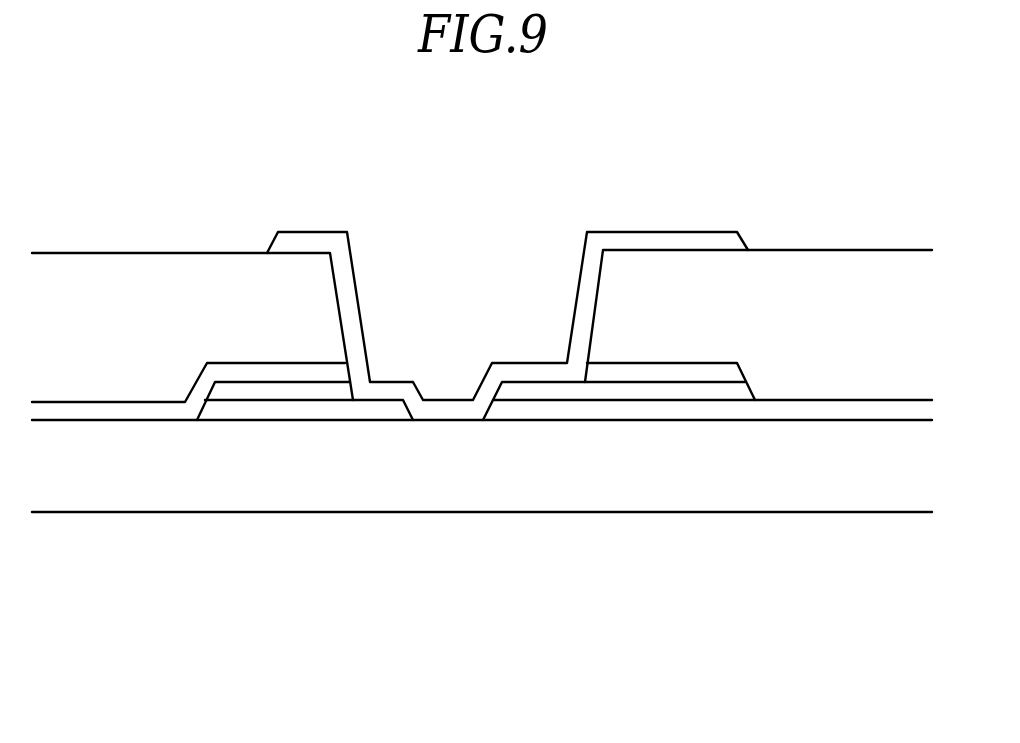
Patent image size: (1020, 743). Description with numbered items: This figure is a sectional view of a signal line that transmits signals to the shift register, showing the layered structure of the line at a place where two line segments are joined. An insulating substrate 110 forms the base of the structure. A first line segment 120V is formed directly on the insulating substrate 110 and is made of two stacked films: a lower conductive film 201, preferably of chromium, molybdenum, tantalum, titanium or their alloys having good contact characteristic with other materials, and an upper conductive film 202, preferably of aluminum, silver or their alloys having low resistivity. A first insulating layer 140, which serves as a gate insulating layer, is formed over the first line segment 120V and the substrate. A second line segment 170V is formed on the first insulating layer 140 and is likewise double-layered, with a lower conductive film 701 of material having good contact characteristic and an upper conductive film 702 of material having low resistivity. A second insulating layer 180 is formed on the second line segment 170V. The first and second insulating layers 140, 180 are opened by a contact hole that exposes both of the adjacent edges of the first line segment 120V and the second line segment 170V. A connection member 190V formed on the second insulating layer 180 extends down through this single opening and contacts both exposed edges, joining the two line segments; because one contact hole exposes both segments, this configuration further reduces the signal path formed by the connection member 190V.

The insulating substrate 110 is at (442, 492).
The first insulating layer 140 is at (100, 410).
The first line segment 120V is at (305, 503).
The lower conductive film 201 is at (243, 392).
The upper conductive film 202 is at (293, 408).
The second line segment 170V is at (619, 501).
The lower conductive film 701 is at (570, 385).
The upper conductive film 702 is at (627, 368).
The second insulating layer 180 is at (866, 382).
The connection member 190V is at (653, 242).